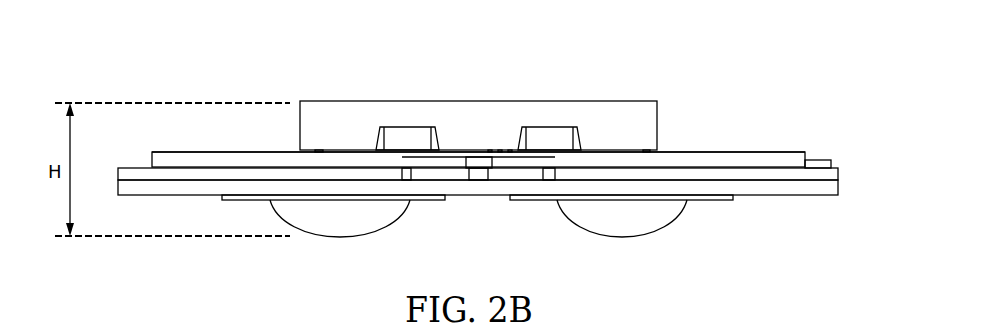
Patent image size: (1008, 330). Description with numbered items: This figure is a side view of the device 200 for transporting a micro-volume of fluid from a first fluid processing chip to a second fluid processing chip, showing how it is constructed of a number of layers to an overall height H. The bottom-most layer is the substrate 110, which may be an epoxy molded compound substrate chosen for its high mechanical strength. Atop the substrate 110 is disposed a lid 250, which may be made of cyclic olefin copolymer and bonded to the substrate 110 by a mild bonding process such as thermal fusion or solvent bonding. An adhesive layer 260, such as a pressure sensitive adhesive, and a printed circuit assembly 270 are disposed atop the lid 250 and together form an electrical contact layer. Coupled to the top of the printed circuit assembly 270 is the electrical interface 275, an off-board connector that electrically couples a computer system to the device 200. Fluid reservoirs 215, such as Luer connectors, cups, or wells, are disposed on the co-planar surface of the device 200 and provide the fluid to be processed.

The device 200 is at (211, 46).
The substrate 110 is at (838, 190).
The fluid reservoir 215 is at (550, 127).
The lid 250 is at (838, 167).
The adhesive layer 260 is at (152, 160).
The printed circuit assembly 270 is at (697, 152).
The electrical interface 275 is at (479, 100).